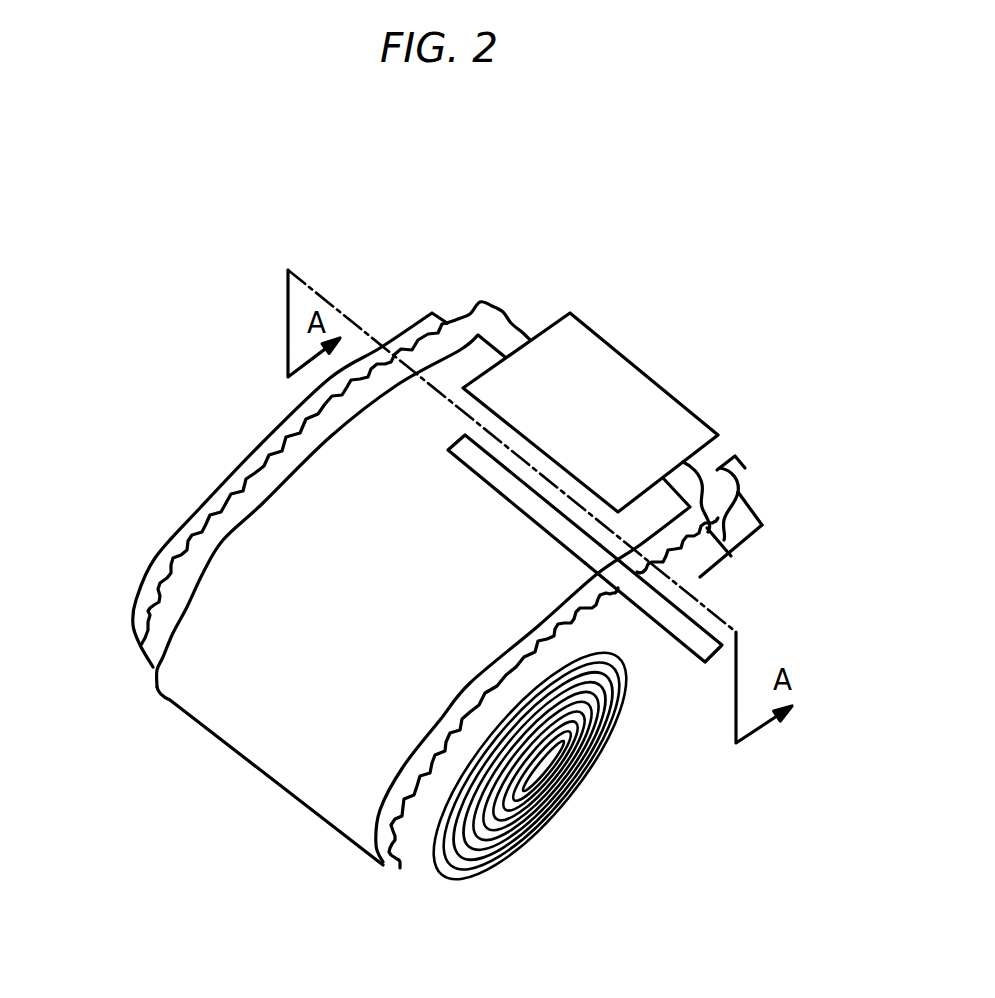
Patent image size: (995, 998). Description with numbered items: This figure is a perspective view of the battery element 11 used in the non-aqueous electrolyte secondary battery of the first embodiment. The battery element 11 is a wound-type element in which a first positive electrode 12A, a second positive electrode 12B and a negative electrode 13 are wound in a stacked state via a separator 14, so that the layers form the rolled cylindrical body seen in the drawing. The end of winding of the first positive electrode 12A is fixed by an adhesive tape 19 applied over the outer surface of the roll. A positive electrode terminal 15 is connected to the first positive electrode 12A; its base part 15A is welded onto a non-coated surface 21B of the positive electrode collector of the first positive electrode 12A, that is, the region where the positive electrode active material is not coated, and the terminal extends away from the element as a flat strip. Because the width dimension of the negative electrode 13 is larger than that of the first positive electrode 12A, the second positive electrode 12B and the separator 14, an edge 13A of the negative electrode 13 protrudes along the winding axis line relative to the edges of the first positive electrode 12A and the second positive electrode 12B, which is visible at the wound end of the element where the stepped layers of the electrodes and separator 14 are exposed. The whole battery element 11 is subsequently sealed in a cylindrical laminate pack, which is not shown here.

The battery element 11 is at (220, 754).
The first positive electrode 12A is at (243, 581).
The second positive electrode 12B is at (753, 533).
The negative electrode 13 is at (703, 572).
The edge of the negative electrode 13A is at (527, 693).
The separator 14 is at (723, 462).
The positive electrode terminal 15 is at (692, 638).
The base part 15A is at (527, 514).
The adhesive tape 19 is at (630, 380).
The non-coated surface 21B is at (320, 523).